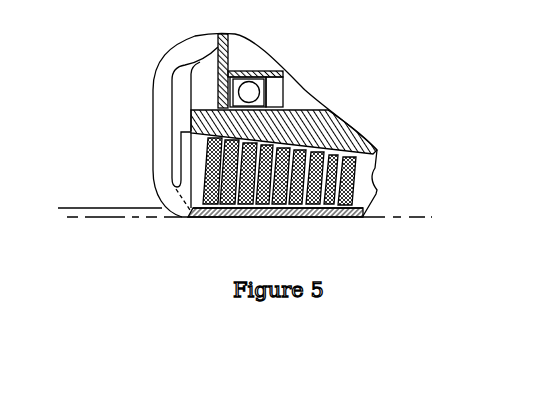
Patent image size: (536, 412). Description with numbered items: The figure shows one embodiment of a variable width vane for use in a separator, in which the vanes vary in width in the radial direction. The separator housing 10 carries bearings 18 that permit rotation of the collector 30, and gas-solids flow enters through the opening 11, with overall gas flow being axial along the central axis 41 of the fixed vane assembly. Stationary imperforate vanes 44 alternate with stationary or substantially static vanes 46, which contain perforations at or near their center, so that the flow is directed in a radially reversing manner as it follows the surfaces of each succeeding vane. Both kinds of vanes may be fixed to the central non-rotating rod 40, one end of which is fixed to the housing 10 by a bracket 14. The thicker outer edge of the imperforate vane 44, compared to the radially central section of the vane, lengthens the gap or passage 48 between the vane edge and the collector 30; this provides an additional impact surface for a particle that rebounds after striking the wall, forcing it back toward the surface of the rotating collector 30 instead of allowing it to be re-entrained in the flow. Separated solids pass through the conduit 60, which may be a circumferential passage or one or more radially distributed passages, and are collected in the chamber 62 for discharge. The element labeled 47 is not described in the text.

The separator housing 10 is at (280, 71).
The opening 11 is at (99, 210).
The bracket 14 is at (160, 190).
The bearings 18 is at (263, 90).
The collector 30 is at (327, 122).
The central non-rotating rod 40 is at (190, 220).
The central axis 41 is at (385, 217).
The imperforate vane 44 is at (205, 173).
The perforated vane 46 is at (231, 207).
The plate upper surface 47 is at (217, 218).
The gap or passage 48 is at (178, 134).
The conduit 60 is at (183, 93).
The chamber 62 is at (187, 53).